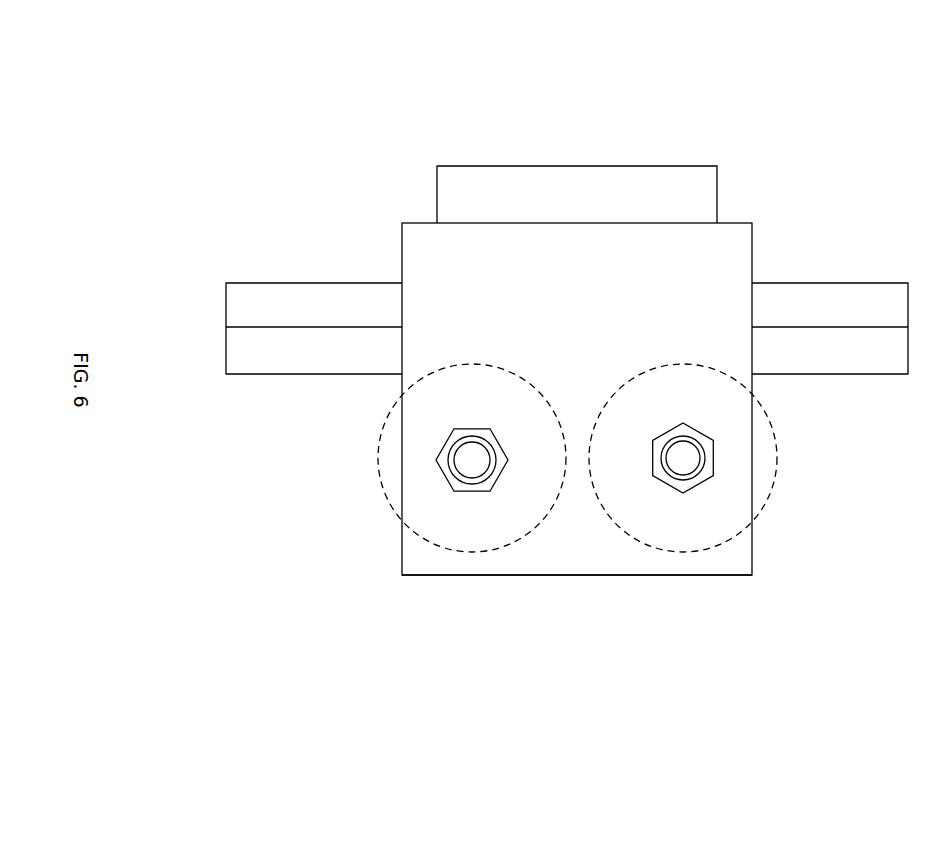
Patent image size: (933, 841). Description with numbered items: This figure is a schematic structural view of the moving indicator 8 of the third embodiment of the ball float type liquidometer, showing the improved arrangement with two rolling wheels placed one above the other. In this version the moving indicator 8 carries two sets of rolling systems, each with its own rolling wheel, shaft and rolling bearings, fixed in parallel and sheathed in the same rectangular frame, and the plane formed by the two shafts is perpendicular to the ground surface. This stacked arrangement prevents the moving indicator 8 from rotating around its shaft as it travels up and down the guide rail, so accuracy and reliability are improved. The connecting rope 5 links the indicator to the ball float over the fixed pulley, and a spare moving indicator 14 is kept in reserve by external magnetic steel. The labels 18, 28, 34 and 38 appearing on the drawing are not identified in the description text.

The connecting rope 5 is at (843, 374).
The moving indicator 8 is at (760, 250).
The spare moving indicator 14 is at (441, 508).
The washer 18 is at (497, 458).
The top plate 28 is at (592, 166).
The base plate 34 is at (402, 566).
The bolt 38 is at (472, 460).